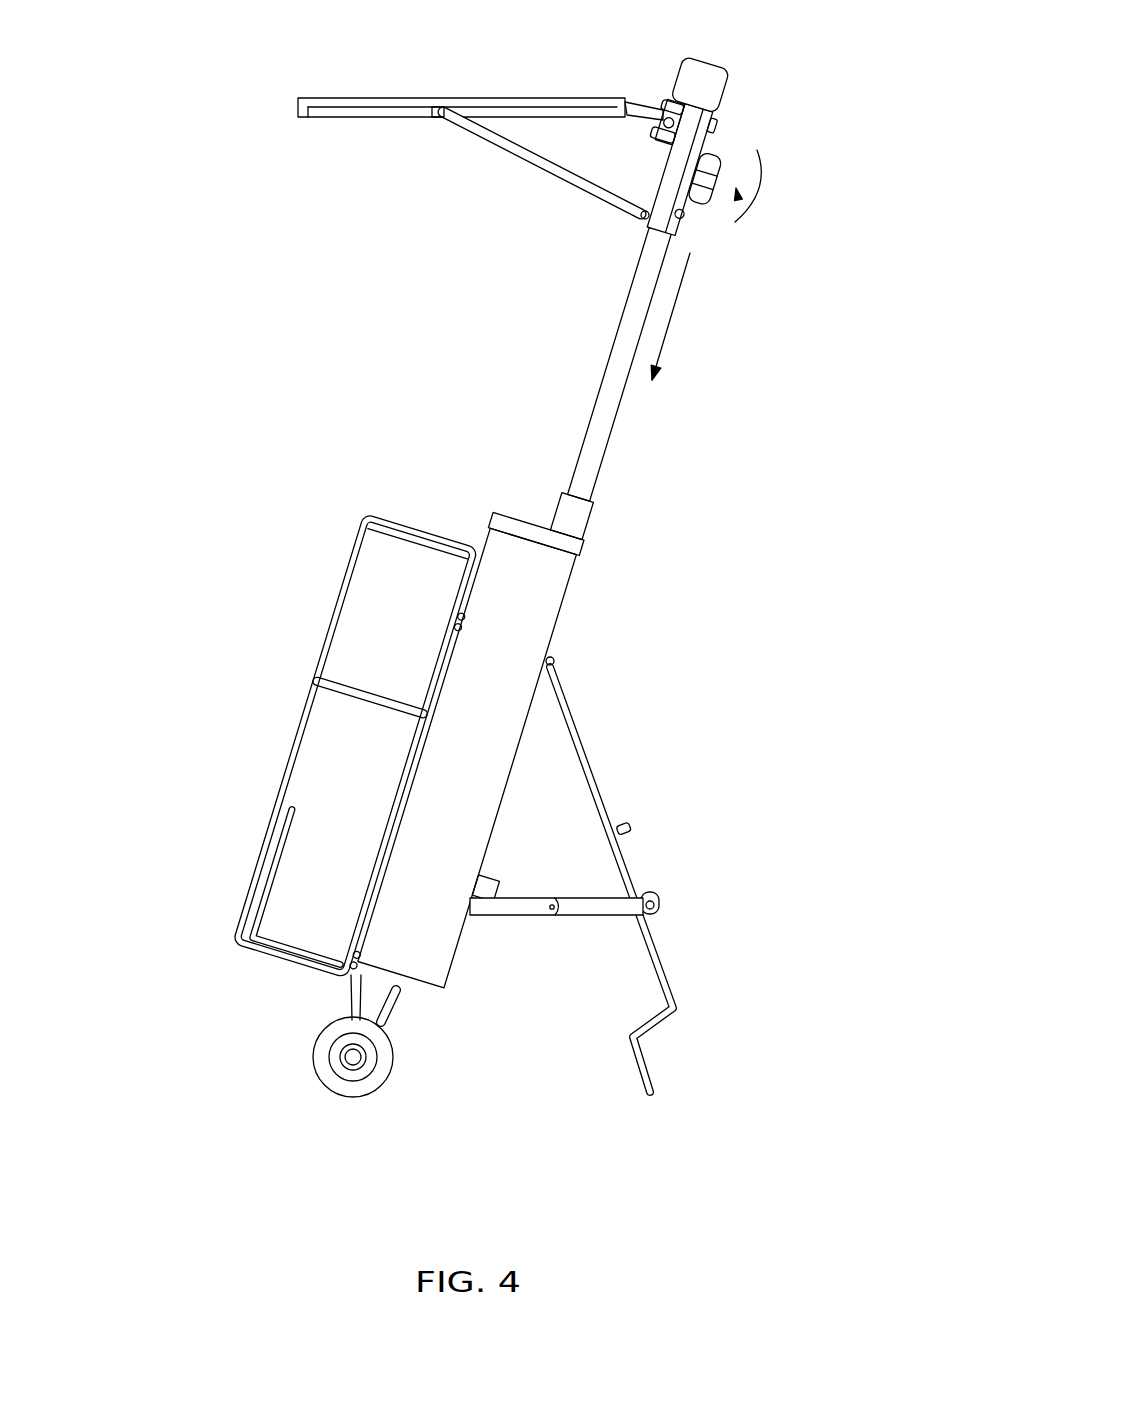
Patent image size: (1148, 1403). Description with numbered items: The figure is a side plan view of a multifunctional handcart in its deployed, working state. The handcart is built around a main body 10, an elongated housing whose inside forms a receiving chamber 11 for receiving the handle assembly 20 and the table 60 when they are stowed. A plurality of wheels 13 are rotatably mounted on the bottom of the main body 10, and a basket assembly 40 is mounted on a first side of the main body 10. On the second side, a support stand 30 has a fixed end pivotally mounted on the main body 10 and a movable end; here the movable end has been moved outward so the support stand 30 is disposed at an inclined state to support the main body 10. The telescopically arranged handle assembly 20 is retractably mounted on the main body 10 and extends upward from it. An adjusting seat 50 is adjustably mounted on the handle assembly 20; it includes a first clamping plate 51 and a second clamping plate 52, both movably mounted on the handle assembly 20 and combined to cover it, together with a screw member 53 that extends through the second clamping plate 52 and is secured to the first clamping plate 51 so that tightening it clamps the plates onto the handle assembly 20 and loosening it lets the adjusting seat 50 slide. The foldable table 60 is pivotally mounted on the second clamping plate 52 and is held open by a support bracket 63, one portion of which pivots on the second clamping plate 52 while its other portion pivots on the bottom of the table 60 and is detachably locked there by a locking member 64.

The main body 10 is at (568, 590).
The receiving chamber 11 is at (518, 520).
The wheels 13 is at (378, 1093).
The handle assembly 20 is at (737, 60).
The support stand 30 is at (683, 992).
The basket assembly 40 is at (230, 953).
The adjusting seat 50 is at (716, 121).
The first clamping plate 51 is at (663, 183).
The second clamping plate 52 is at (682, 214).
The screw member 53 is at (708, 200).
The table 60 is at (298, 98).
The support bracket 63 is at (530, 153).
The locking member 64 is at (436, 116).